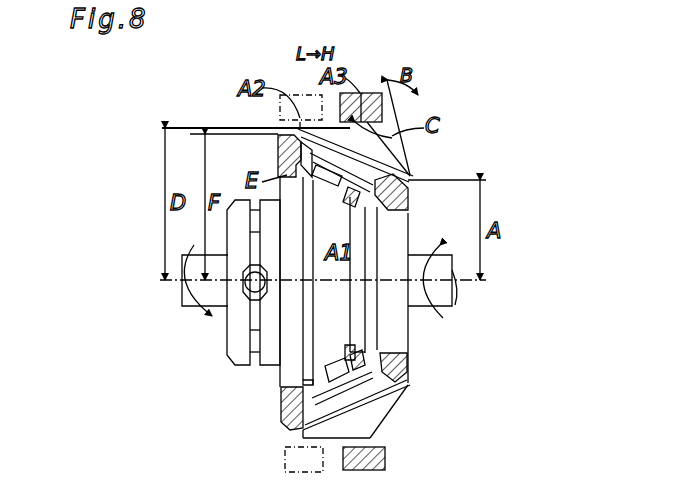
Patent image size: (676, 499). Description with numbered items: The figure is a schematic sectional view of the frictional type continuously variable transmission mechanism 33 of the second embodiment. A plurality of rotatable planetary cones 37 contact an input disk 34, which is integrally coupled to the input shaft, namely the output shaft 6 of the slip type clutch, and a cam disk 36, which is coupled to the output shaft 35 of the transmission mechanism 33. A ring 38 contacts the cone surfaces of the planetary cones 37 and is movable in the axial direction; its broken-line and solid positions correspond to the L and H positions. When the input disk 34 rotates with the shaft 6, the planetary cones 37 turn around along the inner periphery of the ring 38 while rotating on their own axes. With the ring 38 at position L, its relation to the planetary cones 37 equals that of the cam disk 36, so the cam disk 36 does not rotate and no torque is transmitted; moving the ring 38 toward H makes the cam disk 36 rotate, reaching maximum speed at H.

The output shaft of the slip type clutch 6 is at (450, 302).
The frictional type continuously variable transmission mechanism 33 is at (452, 355).
The input disk 34 is at (402, 203).
The output shaft 35 is at (196, 310).
The cam disk 36 is at (280, 152).
The planetary cones 37 is at (412, 158).
The ring 38 is at (368, 92).